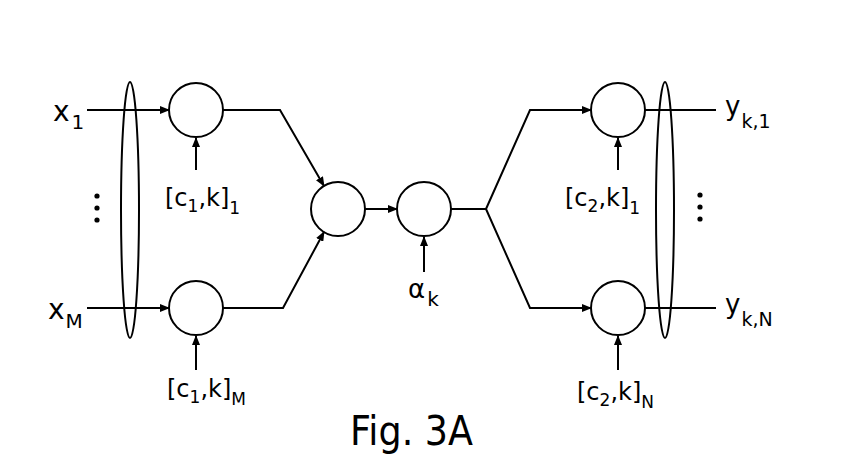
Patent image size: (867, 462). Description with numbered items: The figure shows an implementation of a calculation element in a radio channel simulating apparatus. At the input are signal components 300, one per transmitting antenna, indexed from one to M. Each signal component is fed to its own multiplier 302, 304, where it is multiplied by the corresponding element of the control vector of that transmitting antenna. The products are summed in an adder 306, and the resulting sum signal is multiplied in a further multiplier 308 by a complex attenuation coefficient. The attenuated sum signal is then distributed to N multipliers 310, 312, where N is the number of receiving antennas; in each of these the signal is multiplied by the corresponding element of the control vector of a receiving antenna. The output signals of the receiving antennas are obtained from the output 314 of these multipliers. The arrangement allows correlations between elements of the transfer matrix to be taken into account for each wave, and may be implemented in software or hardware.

The signal components 300 is at (124, 331).
The multiplier 302 is at (199, 83).
The multiplier 304 is at (198, 281).
The adder 306 is at (354, 186).
The multiplier 308 is at (441, 187).
The multiplier 310 is at (600, 83).
The multiplier 312 is at (600, 330).
The output 314 is at (672, 323).